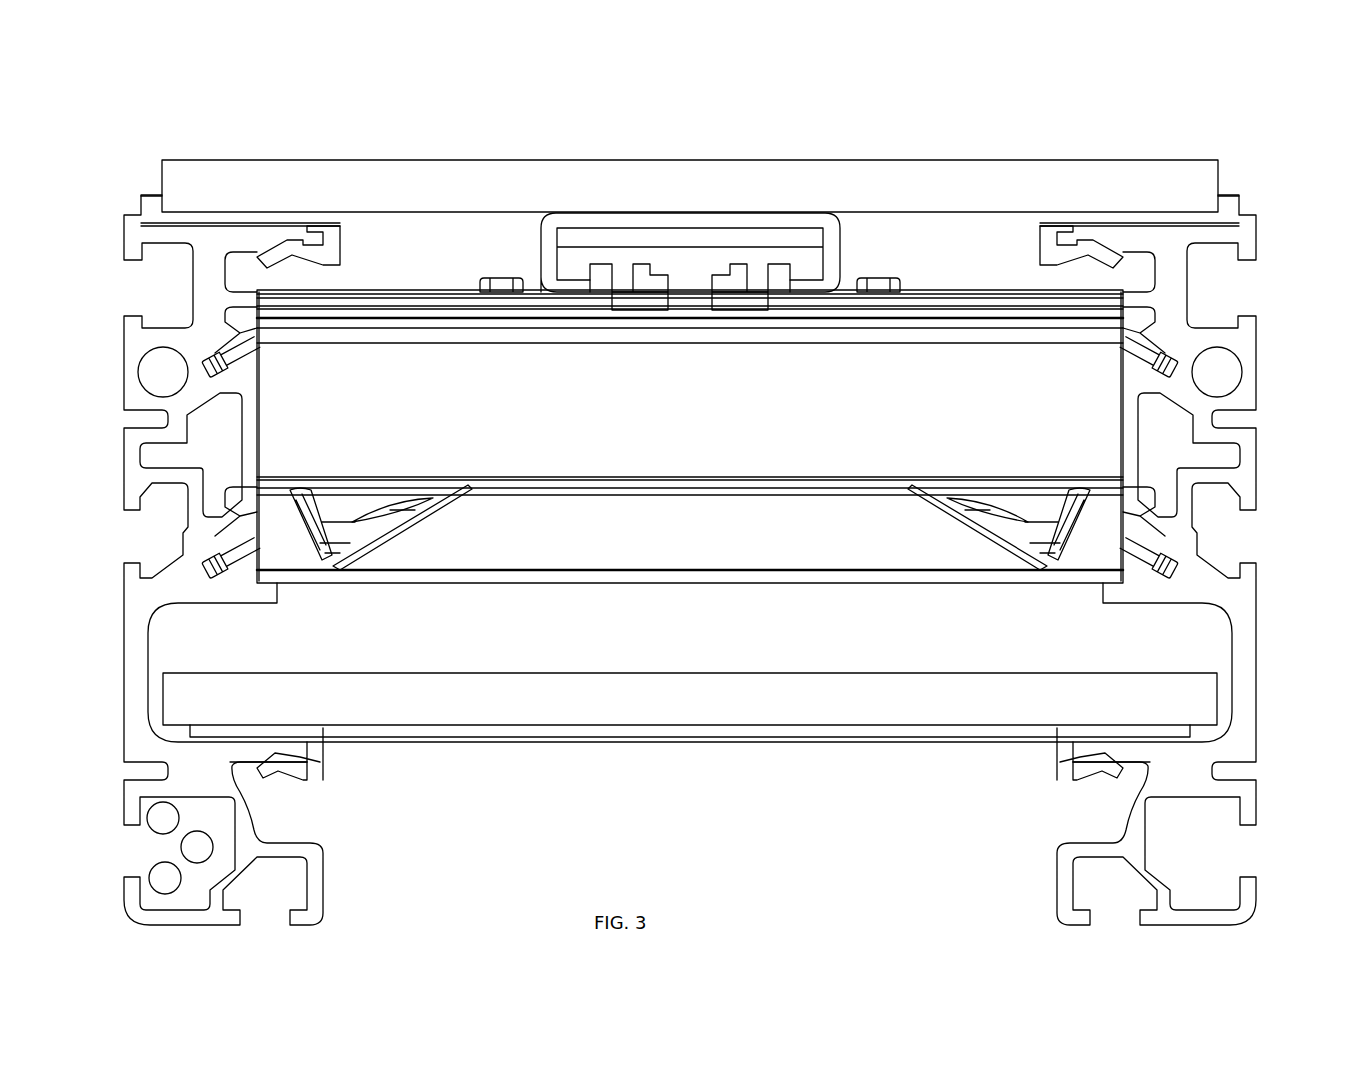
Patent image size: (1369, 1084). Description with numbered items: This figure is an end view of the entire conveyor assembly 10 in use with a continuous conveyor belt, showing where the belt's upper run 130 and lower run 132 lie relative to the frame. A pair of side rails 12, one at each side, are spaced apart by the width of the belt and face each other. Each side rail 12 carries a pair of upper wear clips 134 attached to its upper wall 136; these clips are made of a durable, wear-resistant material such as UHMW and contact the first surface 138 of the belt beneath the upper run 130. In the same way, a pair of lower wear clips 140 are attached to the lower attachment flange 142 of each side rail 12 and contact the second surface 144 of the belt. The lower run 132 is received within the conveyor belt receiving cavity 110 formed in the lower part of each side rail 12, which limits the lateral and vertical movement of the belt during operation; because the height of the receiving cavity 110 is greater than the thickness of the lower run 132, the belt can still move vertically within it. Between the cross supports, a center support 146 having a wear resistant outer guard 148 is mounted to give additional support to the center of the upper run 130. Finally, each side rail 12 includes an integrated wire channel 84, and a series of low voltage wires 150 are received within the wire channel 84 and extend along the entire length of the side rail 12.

The conveyor frame assembly 10 is at (1277, 188).
The side rail 12 is at (132, 480).
The wire channel 84 is at (130, 856).
The conveyor belt receiving cavity 110 is at (170, 635).
The upper run 130 is at (380, 180).
The lower run 132 is at (535, 700).
The upper wear clip 134 is at (193, 213).
The upper wall 136 is at (248, 242).
The first surface 138 is at (457, 213).
The lower wear clip 140 is at (313, 763).
The lower attachment flange 142 is at (250, 750).
The second surface 144 is at (655, 727).
The center support 146 is at (693, 230).
The wear resistant outer guard 148 is at (613, 220).
The low voltage wires 150 is at (160, 900).